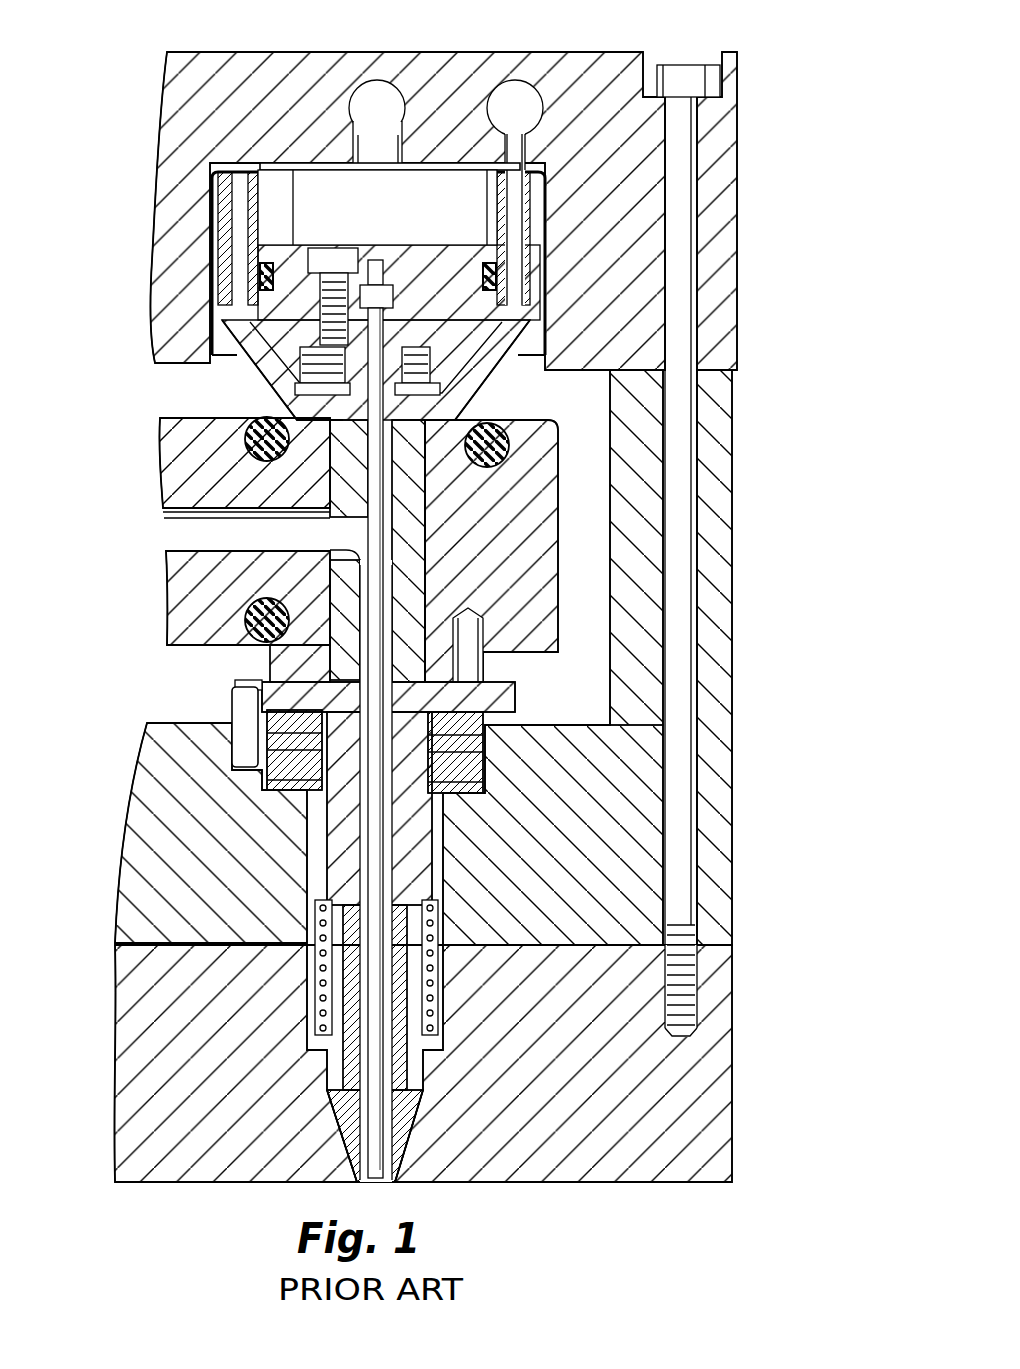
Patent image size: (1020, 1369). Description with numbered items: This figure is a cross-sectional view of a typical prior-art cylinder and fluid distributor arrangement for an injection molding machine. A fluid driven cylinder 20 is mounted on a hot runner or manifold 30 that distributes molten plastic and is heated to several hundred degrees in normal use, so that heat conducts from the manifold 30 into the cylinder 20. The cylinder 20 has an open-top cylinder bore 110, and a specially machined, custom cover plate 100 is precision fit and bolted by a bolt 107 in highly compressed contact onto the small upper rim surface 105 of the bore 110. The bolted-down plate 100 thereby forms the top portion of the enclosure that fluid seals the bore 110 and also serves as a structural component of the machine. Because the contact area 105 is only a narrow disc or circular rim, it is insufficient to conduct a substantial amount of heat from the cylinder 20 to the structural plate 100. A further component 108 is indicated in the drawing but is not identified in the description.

The cover plate 100 is at (205, 52).
The upper rim surface 105 is at (227, 168).
The bolt 107 is at (690, 192).
The mold plate 108 is at (784, 358).
The open-top cylinder bore 110 is at (310, 200).
The cylinder 20 is at (238, 382).
The hot runner or manifold 30 is at (149, 481).